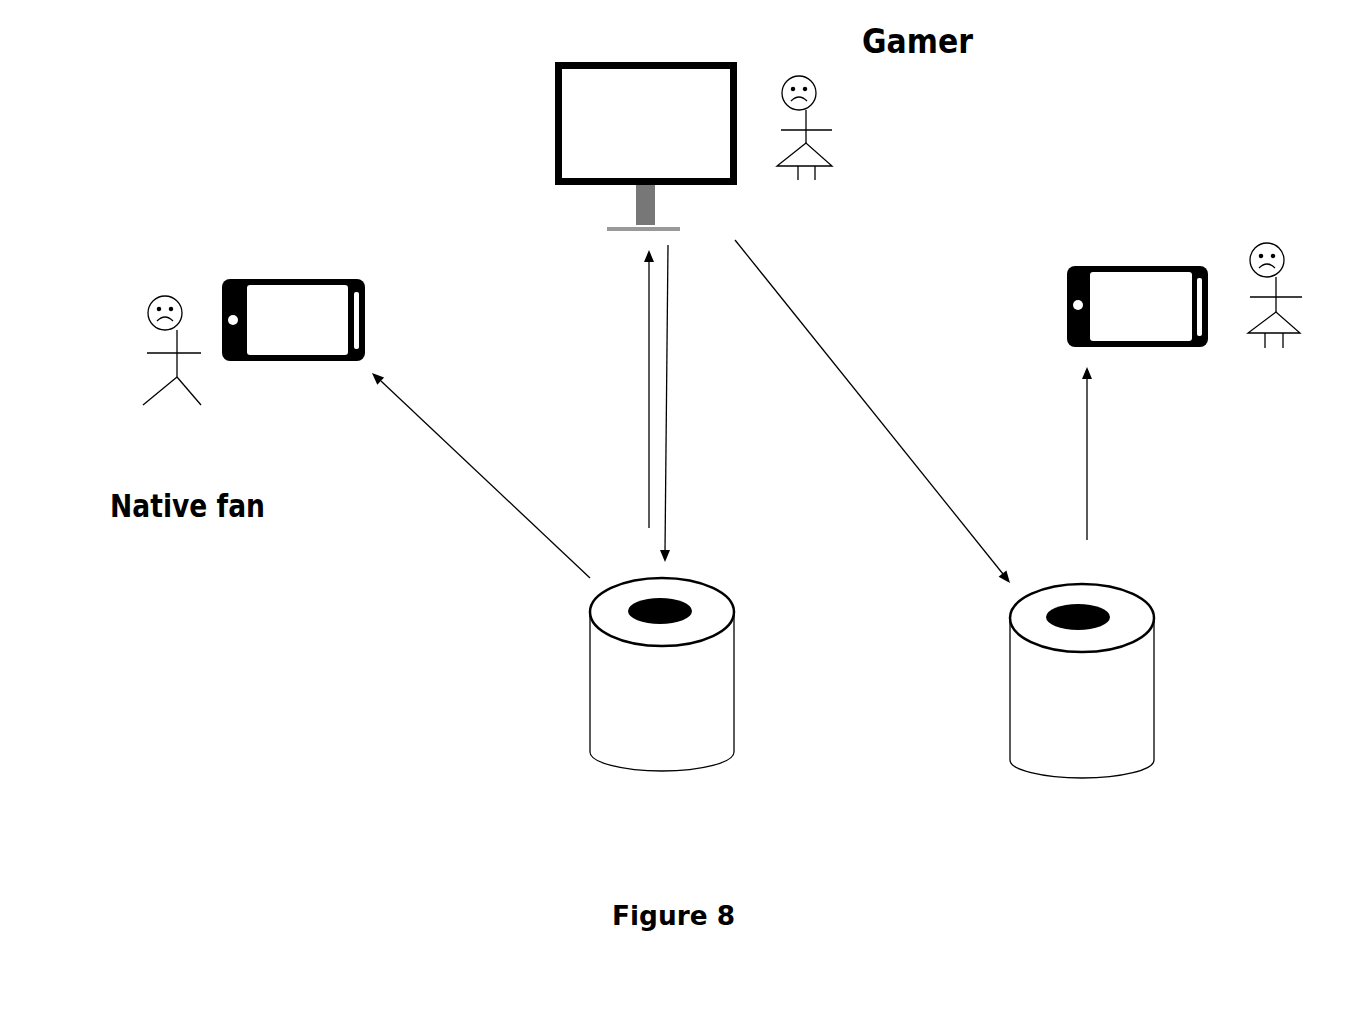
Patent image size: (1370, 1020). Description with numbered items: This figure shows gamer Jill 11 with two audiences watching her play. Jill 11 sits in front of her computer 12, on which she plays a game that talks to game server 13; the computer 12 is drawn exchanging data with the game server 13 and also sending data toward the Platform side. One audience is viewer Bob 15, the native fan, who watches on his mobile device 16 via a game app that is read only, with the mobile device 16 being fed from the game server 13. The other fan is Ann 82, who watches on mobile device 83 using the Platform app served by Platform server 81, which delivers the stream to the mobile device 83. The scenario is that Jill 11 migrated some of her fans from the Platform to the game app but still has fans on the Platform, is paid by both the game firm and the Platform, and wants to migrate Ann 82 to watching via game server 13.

The computer 12 is at (646, 124).
The gamer Jill 11 is at (801, 157).
The mobile device 16 is at (290, 300).
The viewer Bob 15 is at (161, 378).
The game server 13 is at (666, 692).
The Platform server 81 is at (1085, 698).
The mobile device 83 is at (1130, 282).
The Ann 82 is at (1280, 324).